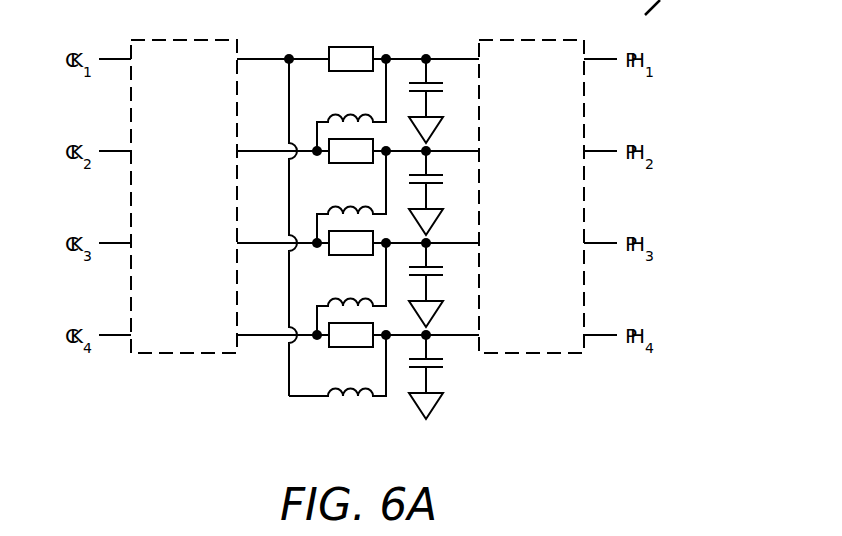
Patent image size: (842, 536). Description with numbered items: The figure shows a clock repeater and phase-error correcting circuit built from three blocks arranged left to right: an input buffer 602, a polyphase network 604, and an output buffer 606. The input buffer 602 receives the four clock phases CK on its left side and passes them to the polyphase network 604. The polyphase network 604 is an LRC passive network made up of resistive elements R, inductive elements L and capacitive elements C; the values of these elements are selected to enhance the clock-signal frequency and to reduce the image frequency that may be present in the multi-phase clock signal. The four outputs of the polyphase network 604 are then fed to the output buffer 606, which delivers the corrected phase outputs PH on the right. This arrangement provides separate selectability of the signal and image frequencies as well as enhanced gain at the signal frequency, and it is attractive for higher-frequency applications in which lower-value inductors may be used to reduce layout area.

The input buffer 602 is at (222, 40).
The polyphase network 604 is at (448, 423).
The output buffer 606 is at (568, 40).